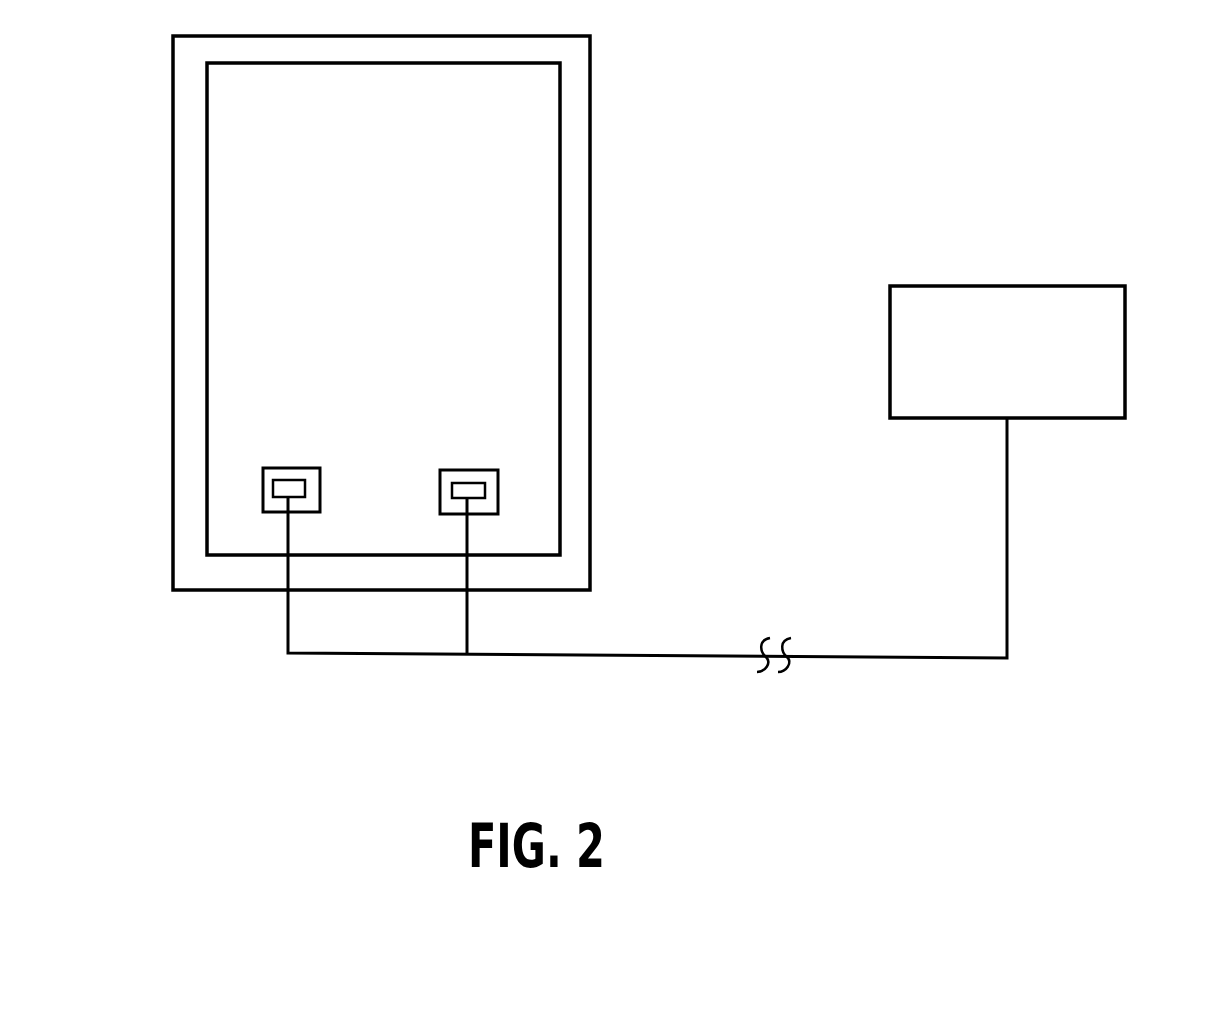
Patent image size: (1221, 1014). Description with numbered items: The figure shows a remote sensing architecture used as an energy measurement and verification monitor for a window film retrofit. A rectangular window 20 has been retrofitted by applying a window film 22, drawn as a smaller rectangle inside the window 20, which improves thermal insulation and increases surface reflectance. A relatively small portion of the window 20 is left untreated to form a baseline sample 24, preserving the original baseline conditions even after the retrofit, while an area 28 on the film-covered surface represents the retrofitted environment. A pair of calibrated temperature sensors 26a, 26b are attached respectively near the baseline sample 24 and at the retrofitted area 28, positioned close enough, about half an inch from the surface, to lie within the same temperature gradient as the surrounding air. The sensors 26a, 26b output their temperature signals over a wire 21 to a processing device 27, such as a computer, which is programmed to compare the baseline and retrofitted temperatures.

The window 20 is at (561, 106).
The window film 22 is at (527, 262).
The baseline sample 24 is at (494, 470).
The retrofitted surface area 28 is at (264, 468).
The temperature sensor 26a is at (498, 488).
The temperature sensor 26b is at (273, 490).
The processing device 27 is at (1098, 420).
The wire 21 is at (873, 659).